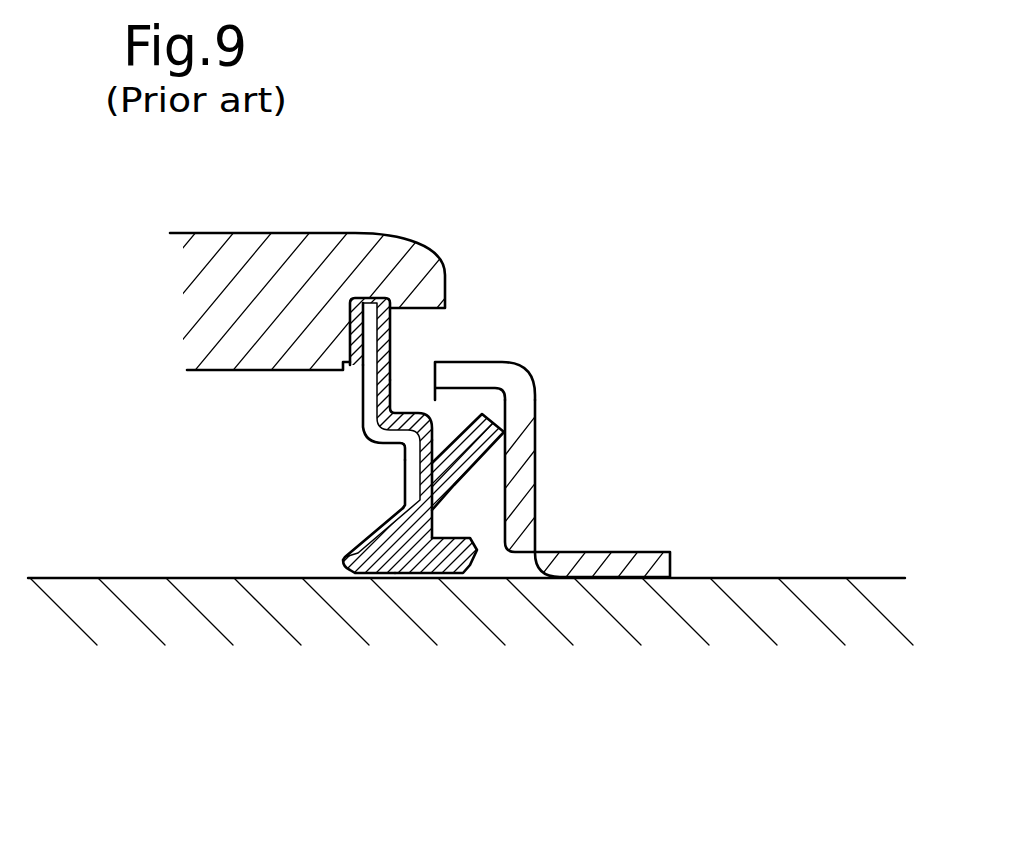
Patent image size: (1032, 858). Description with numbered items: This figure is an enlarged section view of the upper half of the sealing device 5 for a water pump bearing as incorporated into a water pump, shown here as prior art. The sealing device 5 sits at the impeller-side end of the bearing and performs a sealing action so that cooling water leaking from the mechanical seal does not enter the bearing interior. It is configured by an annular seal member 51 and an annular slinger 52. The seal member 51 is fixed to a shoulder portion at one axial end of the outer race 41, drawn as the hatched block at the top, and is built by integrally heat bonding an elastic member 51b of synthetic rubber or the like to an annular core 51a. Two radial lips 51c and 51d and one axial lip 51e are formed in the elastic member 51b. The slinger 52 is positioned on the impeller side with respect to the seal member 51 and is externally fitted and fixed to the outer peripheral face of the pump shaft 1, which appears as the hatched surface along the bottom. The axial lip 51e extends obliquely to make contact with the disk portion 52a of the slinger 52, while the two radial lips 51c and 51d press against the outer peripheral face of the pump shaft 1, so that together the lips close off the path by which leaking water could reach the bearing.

The pump shaft 1 is at (183, 578).
The sealing device 5 is at (464, 470).
The outer race 41 is at (253, 243).
The seal member 51 is at (426, 495).
The annular core 51a is at (400, 460).
The elastic member 51b is at (380, 362).
The radial lip 51c is at (352, 578).
The radial lip 51d is at (468, 578).
The axial lip 51e is at (497, 442).
The slinger 52 is at (636, 470).
The disk portion 52a is at (527, 412).